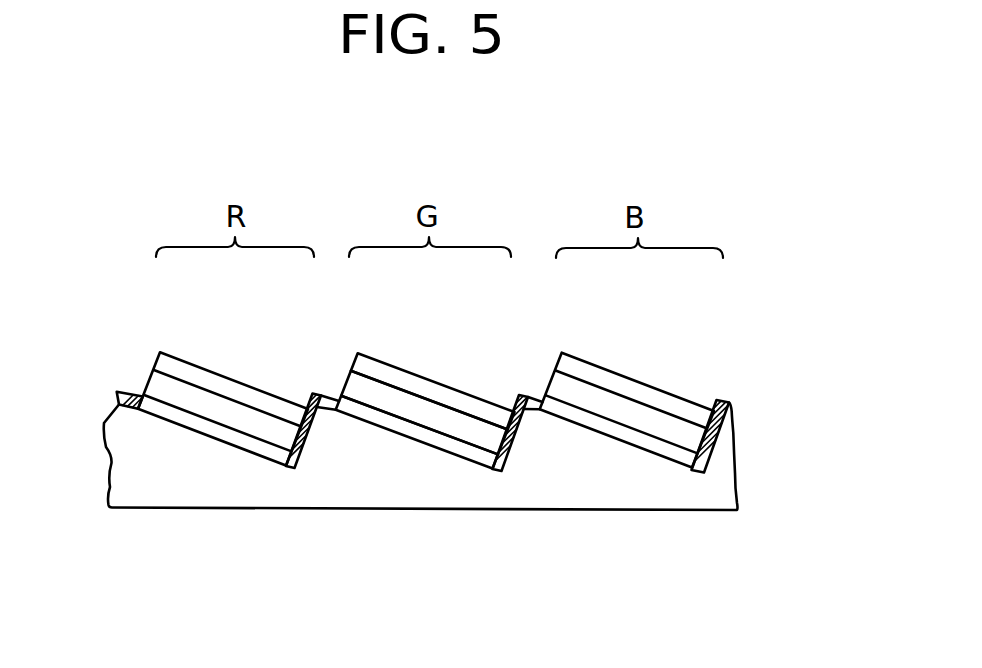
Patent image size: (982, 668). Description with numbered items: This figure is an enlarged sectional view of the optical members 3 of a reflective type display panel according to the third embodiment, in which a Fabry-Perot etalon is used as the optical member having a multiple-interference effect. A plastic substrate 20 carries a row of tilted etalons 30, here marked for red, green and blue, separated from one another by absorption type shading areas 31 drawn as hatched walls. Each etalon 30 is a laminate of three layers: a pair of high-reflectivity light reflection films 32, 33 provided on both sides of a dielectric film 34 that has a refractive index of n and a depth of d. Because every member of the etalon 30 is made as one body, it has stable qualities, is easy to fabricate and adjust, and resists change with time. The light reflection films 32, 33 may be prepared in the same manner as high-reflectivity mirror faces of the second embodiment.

The optical members 3 is at (790, 350).
The plastic substrate 20 is at (188, 493).
The etalon 30 is at (149, 372).
The absorption type shading areas 31 is at (314, 393).
The light reflection film 32 is at (377, 417).
The light reflection film 33 is at (487, 410).
The dielectric film 34 is at (437, 408).